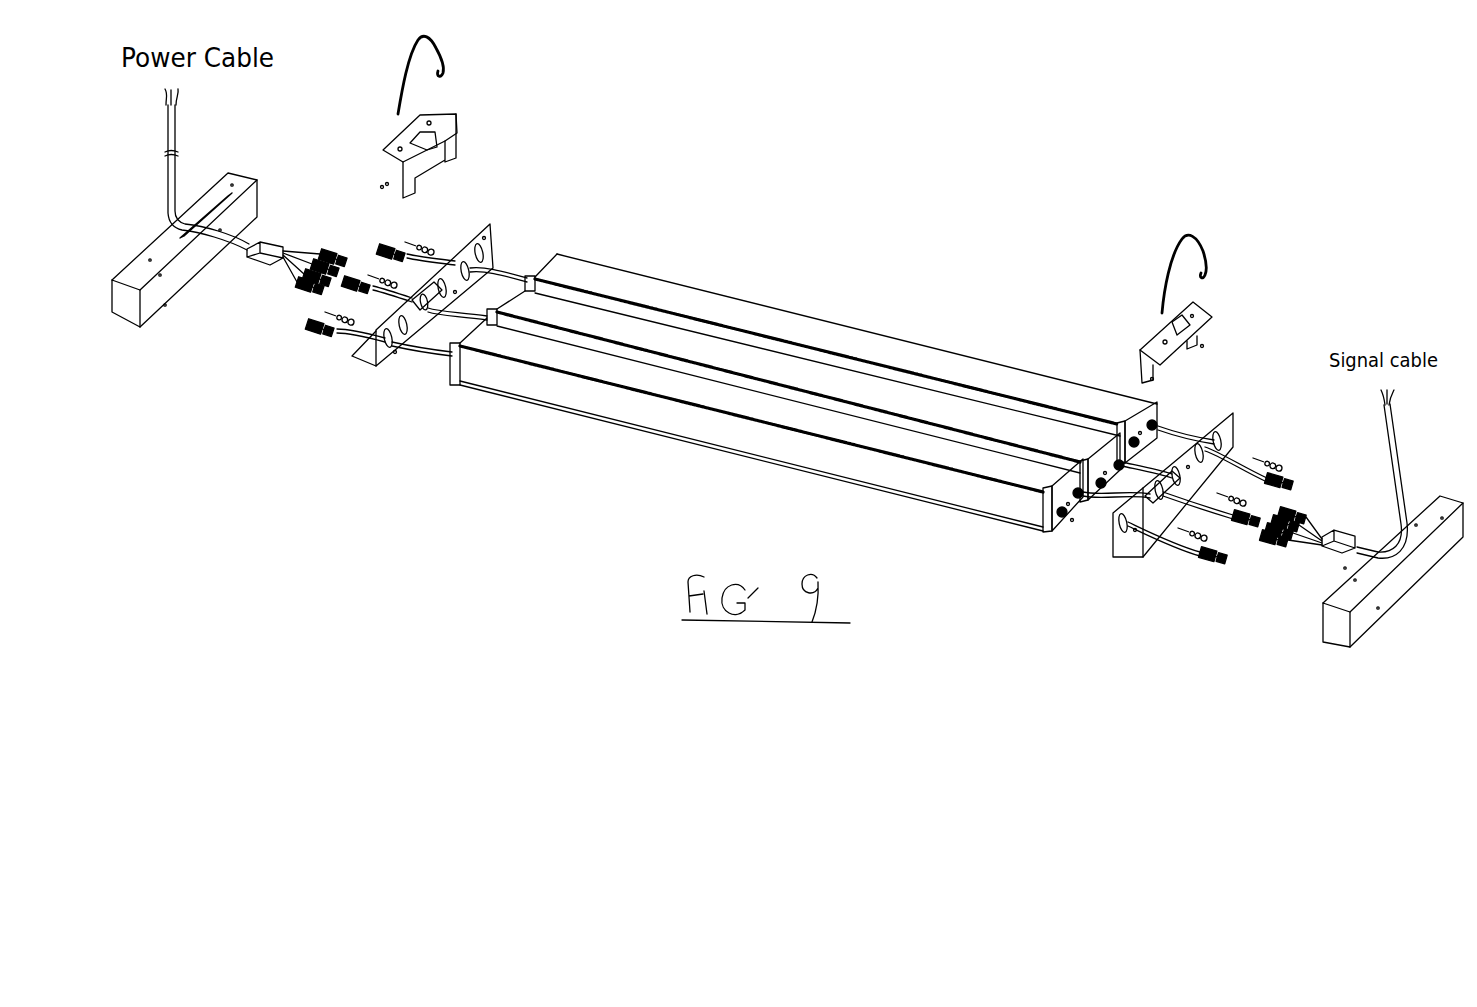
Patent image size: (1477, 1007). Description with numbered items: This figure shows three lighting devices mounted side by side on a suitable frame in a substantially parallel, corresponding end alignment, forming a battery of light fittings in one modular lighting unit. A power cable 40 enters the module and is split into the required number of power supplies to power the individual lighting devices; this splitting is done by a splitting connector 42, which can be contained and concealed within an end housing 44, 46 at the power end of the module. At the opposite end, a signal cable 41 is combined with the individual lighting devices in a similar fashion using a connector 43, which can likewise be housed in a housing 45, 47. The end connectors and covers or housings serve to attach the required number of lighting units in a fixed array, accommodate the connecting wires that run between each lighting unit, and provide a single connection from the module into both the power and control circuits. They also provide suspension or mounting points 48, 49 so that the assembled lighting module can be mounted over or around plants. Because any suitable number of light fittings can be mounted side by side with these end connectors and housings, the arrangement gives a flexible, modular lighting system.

The power cable 40 is at (207, 169).
The signal cable 41 is at (1397, 474).
The splitting connector 42 is at (297, 255).
The connector 43 is at (1310, 523).
The end housing 44 is at (122, 314).
The housing 45 is at (1345, 645).
The end housing 46 is at (373, 372).
The housing 47 is at (1127, 556).
The suspension or mounting point 48 is at (443, 117).
The suspension or mounting point 49 is at (1198, 309).